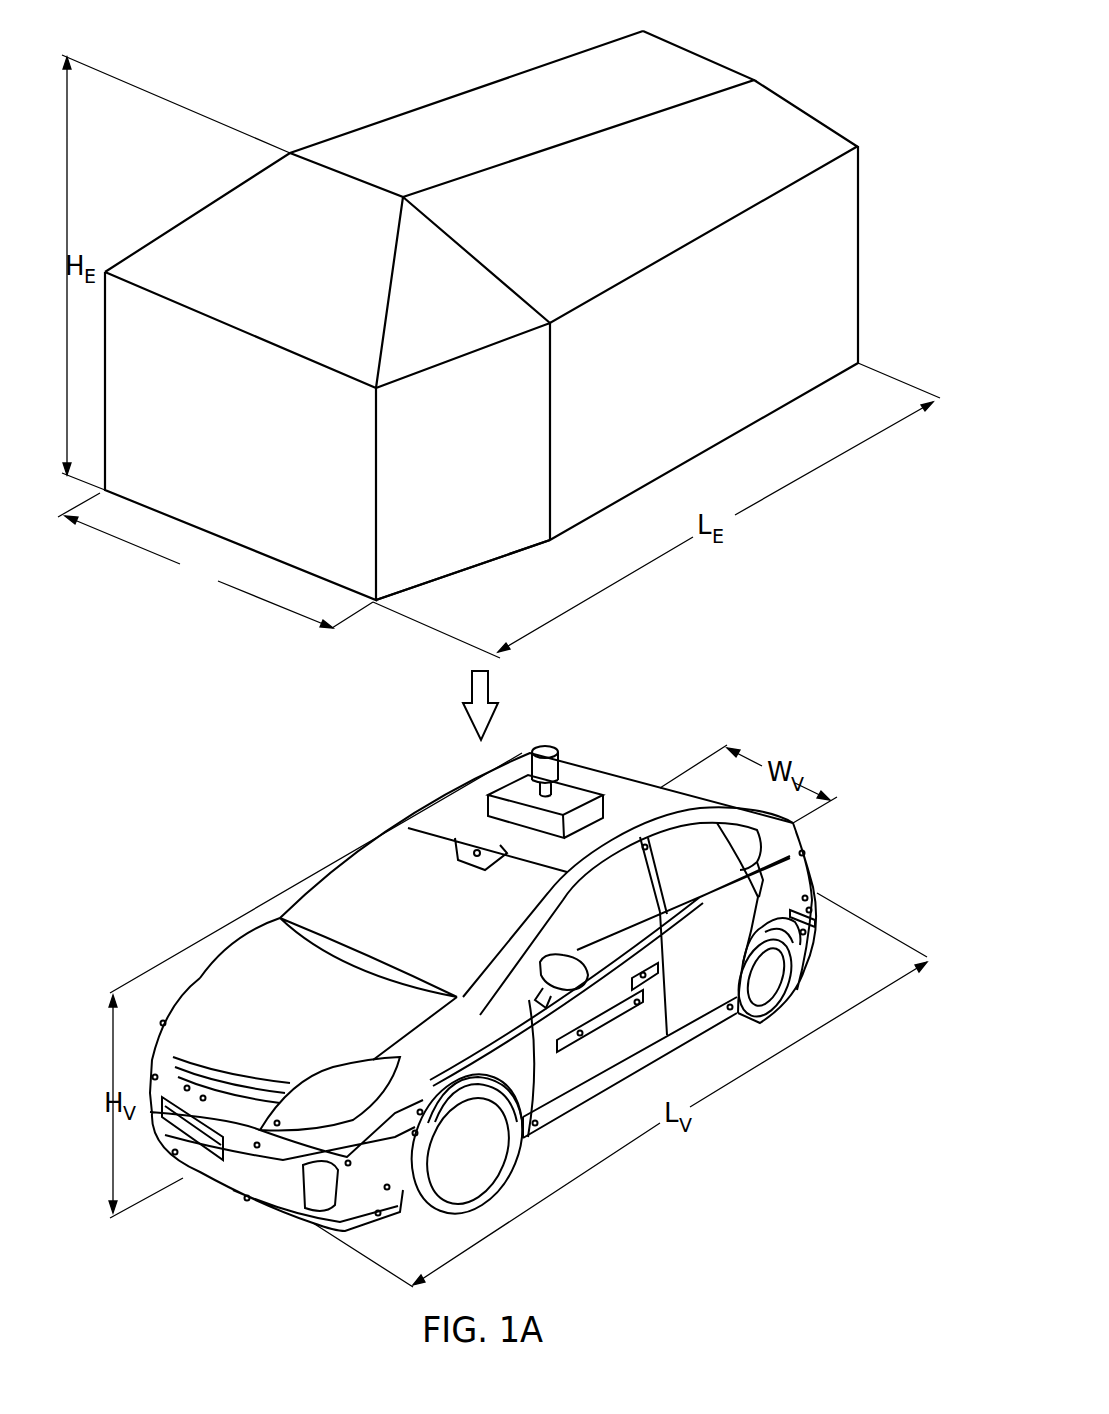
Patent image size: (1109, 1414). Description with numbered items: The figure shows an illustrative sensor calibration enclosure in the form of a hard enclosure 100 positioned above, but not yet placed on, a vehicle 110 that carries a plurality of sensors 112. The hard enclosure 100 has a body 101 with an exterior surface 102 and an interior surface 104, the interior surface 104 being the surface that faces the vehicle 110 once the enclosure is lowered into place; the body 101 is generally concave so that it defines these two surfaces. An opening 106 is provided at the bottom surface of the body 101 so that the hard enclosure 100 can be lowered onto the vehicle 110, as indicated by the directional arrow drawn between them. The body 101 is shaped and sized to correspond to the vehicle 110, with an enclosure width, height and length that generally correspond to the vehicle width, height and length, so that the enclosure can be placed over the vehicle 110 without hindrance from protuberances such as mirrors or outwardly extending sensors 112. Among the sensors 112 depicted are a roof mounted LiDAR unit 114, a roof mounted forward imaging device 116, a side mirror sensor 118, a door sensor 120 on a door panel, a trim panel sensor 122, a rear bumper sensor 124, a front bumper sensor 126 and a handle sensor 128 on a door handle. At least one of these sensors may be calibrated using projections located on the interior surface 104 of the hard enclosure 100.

The hard enclosure 100 is at (504, 304).
The body 101 is at (490, 84).
The exterior surface 102 is at (333, 100).
The interior surface 104 is at (307, 582).
The opening 106 is at (483, 572).
The vehicle 110 is at (492, 1014).
The plurality of sensors 112 is at (122, 858).
The Light Detection and Ranging (LiDAR) unit 114 is at (562, 757).
The forward imaging device 116 is at (588, 792).
The side mirror sensor 118 is at (582, 978).
The door sensor 120 is at (621, 1013).
The trim panel sensor 122 is at (693, 1033).
The rear bumper sensor 124 is at (823, 922).
The front bumper sensor 126 is at (208, 1202).
The handle sensor 128 is at (652, 967).